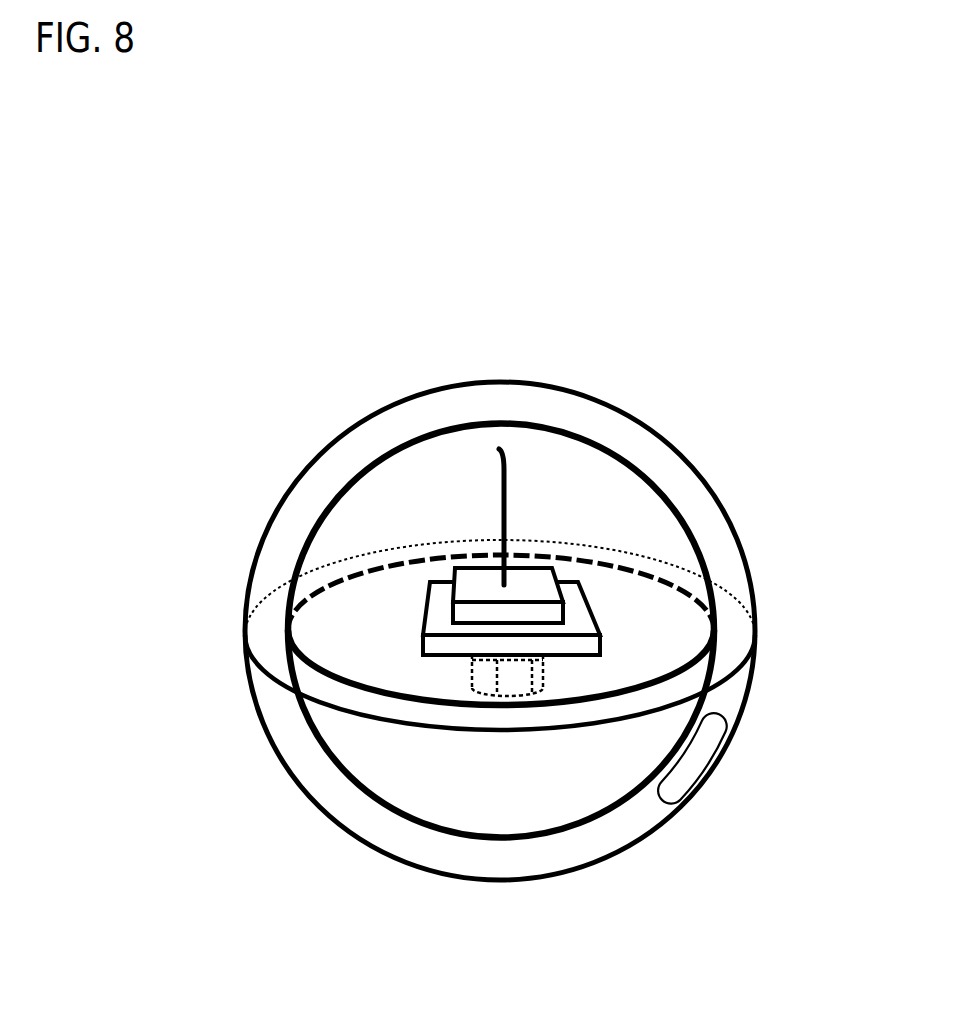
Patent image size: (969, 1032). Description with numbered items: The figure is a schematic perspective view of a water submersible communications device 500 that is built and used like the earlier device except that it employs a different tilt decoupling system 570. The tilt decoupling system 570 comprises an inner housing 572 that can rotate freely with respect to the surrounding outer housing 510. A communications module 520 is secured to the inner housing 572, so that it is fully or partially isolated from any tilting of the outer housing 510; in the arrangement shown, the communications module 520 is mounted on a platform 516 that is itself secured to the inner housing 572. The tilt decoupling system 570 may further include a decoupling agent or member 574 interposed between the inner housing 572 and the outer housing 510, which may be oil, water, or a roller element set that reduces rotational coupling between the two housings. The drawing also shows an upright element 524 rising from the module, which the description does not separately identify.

The water submersible communications device 500 is at (397, 208).
The outer housing 510 is at (732, 513).
The platform 516 is at (637, 637).
The communications module 520 is at (384, 617).
The pin / antenna 524 is at (507, 507).
The tilt decoupling system 570 is at (638, 364).
The inner housing 572 is at (672, 495).
The decoupling agent or member 574 is at (712, 770).